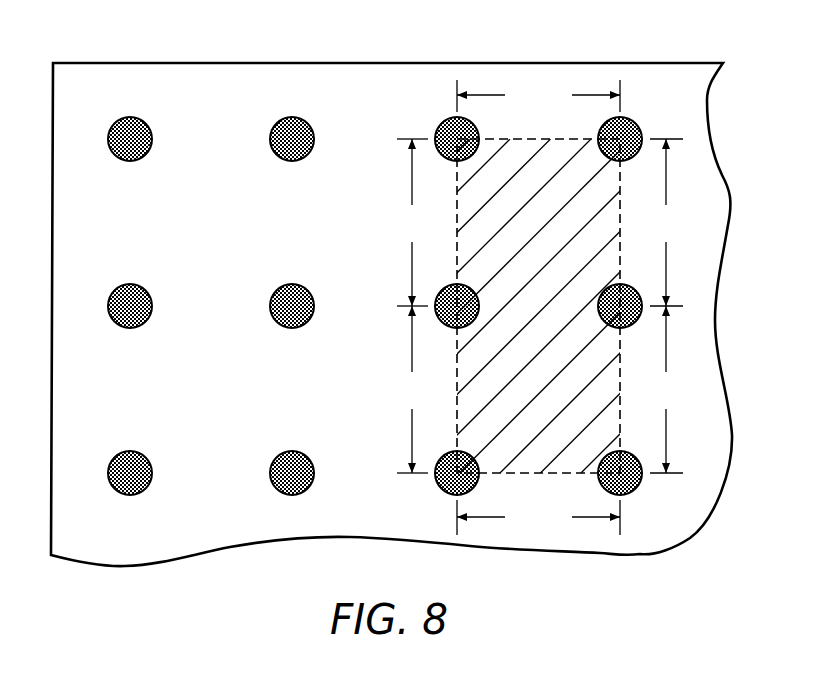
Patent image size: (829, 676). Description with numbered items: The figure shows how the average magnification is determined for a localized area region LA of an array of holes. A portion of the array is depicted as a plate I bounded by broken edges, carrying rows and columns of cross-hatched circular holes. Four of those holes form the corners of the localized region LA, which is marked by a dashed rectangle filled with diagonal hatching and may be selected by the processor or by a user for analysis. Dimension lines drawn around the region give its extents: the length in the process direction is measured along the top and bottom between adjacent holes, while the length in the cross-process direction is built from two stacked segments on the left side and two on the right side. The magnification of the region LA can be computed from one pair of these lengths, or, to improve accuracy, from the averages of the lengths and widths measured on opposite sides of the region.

The plate with array of holes I is at (432, 63).
The localized region LA is at (552, 318).